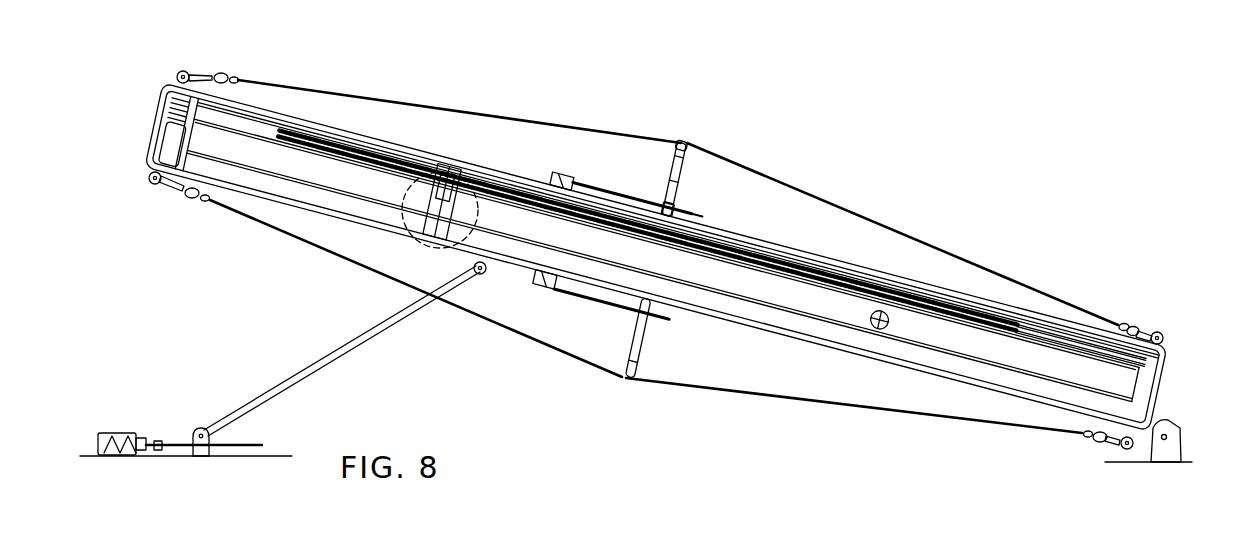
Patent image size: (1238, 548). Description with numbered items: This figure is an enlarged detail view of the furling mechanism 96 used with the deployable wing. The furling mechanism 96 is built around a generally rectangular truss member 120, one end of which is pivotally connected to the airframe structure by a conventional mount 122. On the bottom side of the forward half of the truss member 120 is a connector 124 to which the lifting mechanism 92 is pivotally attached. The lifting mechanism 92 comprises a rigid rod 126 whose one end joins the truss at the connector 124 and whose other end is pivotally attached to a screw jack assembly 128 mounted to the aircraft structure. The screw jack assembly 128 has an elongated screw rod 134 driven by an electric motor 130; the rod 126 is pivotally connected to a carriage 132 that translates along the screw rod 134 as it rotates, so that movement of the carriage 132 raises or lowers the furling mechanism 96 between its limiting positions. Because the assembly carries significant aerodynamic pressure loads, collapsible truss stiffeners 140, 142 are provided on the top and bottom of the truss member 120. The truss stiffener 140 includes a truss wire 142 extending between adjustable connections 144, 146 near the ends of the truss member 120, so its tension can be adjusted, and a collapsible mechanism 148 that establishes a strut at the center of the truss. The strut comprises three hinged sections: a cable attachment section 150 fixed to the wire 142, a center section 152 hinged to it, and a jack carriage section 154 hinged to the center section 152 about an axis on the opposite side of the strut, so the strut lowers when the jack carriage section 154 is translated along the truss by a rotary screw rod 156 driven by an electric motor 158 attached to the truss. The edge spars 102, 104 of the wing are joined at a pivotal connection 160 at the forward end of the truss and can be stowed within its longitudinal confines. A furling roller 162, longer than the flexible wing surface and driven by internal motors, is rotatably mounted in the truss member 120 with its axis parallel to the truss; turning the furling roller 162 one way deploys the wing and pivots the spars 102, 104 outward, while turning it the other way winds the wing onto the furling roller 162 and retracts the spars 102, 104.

The lifting mechanism 92 is at (345, 349).
The furling mechanism 96 is at (435, 100).
The spar 102 is at (1063, 332).
The spar 104 is at (1071, 342).
The truss member 120 is at (163, 90).
The mount 122 is at (1175, 440).
The connector 124 is at (481, 283).
The rigid rod 126 is at (381, 332).
The screw jack assembly 128 is at (158, 432).
The electric motor 130 is at (104, 440).
The carriage 132 is at (202, 458).
The screw rod 134 is at (178, 455).
The truss stiffener 140 is at (772, 168).
The truss wire 142 is at (917, 235).
The connection 144 is at (205, 74).
The connection 146 is at (1148, 331).
The collapsible mechanism 148 is at (670, 158).
The cable attachment section 150 is at (686, 140).
The center section 152 is at (686, 180).
The jack carriage section 154 is at (656, 193).
The rotary screw rod 156 is at (604, 188).
The electric motor 158 is at (557, 168).
The pivotal connection 160 is at (166, 108).
The furling roller 162 is at (1000, 353).